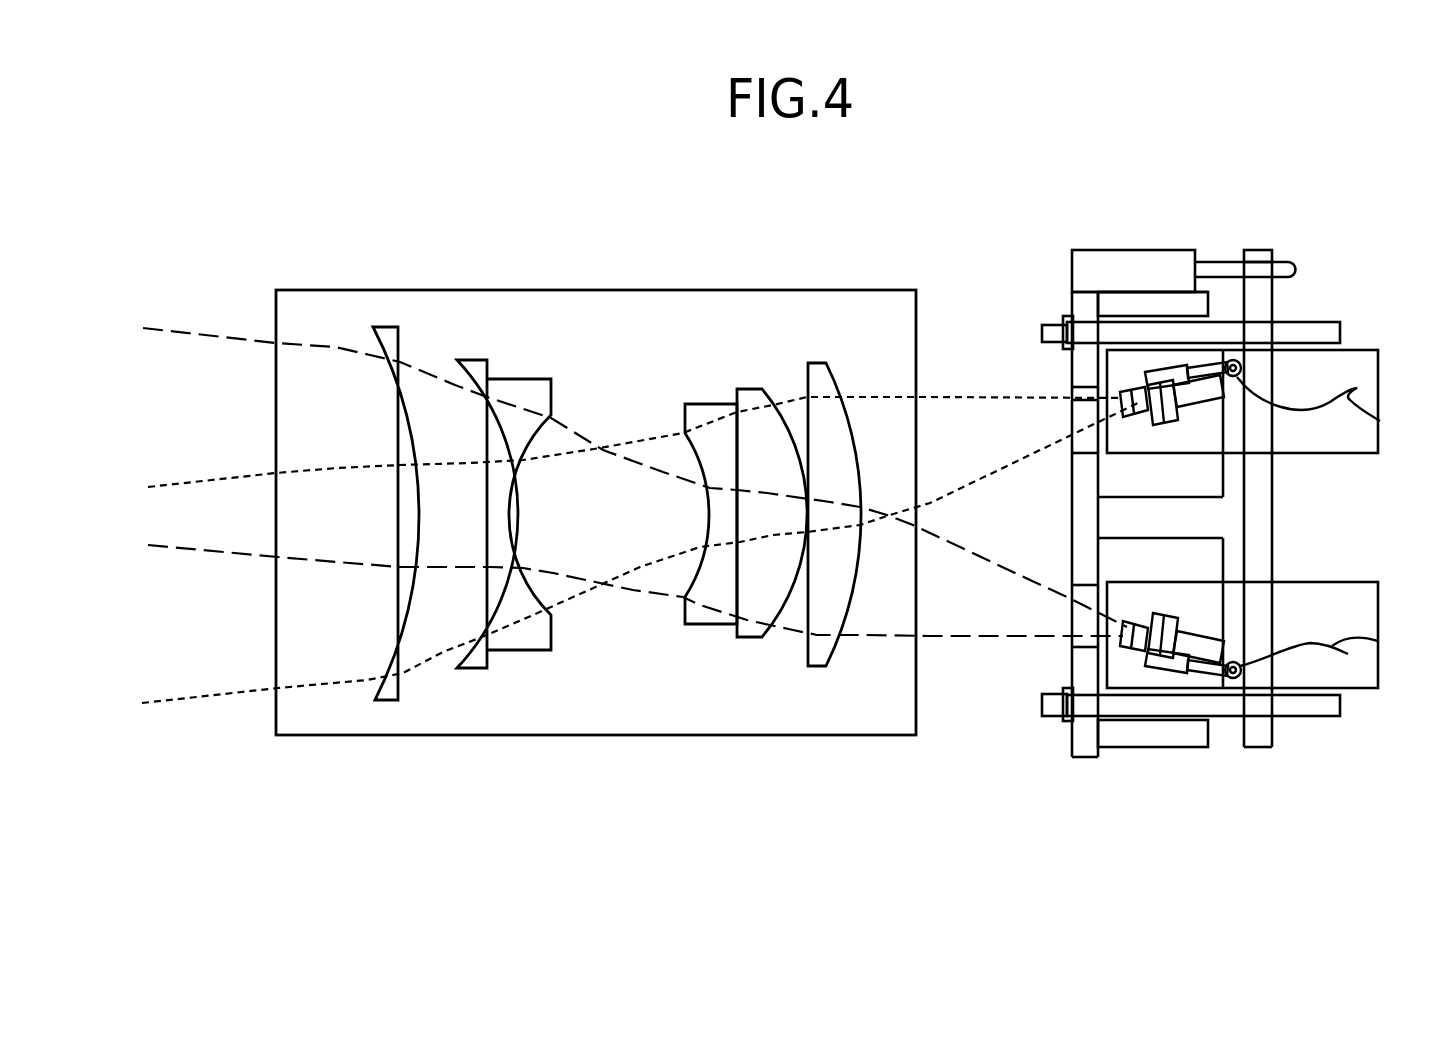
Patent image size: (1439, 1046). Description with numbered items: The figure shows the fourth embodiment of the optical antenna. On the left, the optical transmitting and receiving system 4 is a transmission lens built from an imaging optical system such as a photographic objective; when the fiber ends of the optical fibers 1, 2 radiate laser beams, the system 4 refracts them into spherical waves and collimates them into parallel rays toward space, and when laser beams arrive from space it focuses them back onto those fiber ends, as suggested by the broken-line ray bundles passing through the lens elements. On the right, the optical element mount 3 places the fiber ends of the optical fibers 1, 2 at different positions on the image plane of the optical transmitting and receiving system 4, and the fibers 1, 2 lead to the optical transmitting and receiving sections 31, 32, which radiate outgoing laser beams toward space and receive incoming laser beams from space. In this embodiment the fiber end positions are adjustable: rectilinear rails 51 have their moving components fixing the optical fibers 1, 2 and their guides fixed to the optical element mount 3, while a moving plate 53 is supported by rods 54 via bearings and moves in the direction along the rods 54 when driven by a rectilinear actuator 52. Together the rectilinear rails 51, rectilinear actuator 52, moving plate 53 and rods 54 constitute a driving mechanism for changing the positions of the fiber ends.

The optical transmitting and receiving system 4 is at (708, 290).
The optical element mount 3 is at (1085, 303).
The rectilinear actuator 52 is at (1153, 248).
The moving plate 53 is at (1272, 304).
The rods 54 is at (1342, 326).
The optical transmitting and receiving section 31 is at (1380, 363).
The optical transmitting and receiving section 32 is at (1382, 596).
The rectilinear rails 51 is at (1203, 400).
The optical fiber 1 is at (1380, 421).
The optical fiber 2 is at (1378, 641).